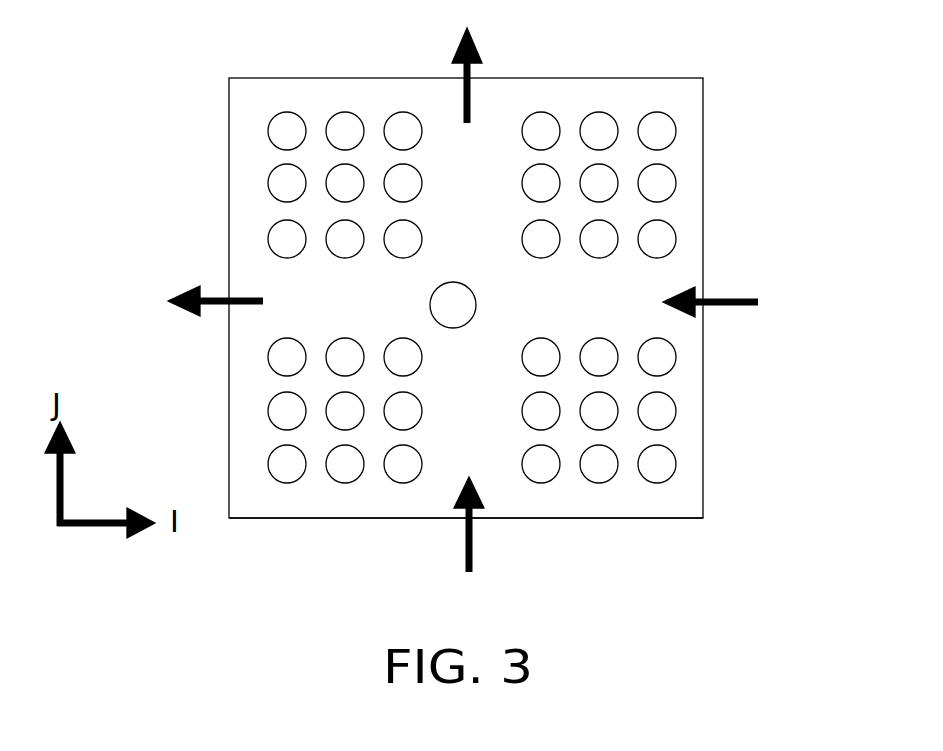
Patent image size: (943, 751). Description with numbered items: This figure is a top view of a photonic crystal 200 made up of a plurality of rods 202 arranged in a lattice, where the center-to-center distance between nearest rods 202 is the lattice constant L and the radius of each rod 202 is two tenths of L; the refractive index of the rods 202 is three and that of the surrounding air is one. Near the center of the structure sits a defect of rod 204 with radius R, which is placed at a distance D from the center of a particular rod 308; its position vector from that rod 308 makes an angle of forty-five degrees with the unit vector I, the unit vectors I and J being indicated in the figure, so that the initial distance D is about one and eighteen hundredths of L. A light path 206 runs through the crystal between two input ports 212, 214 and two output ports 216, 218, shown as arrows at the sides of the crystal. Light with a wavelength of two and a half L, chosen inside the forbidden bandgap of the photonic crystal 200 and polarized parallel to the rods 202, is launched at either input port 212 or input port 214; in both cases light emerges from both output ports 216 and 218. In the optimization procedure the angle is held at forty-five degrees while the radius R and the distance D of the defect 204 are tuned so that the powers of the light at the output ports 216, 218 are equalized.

The photonic crystal 200 is at (703, 102).
The rods 202 is at (675, 182).
The defect of rod 204 is at (476, 300).
The light path 206 is at (466, 473).
The input port 212 is at (473, 556).
The input port 214 is at (735, 298).
The output port 216 is at (470, 90).
The output port 218 is at (218, 297).
The rod 308 is at (422, 357).